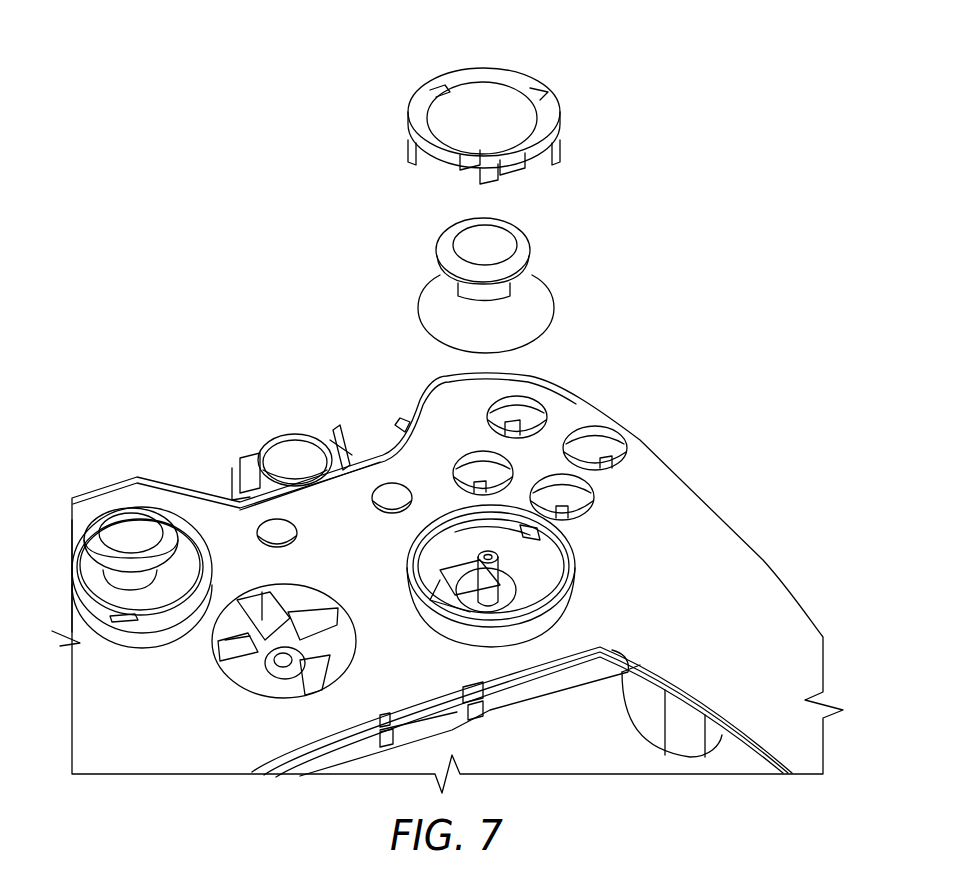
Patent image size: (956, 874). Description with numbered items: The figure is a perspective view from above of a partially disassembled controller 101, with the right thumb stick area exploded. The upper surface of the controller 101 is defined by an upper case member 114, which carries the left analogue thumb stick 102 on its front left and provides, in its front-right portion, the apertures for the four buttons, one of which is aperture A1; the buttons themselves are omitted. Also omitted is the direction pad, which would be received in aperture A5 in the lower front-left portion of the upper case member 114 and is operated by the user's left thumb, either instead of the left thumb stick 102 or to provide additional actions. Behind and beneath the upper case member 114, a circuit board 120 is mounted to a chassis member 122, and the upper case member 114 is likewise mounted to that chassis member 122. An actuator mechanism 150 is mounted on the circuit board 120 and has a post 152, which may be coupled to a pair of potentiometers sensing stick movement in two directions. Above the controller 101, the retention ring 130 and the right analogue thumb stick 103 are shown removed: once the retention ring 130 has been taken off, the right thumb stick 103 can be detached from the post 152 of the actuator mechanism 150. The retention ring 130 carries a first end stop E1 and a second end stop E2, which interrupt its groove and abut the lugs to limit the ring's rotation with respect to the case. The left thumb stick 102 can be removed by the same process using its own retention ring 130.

The controller 101 is at (180, 196).
The left analogue thumb stick 102 is at (130, 522).
The right analogue thumb stick 103 is at (523, 243).
The upper case member 114 is at (762, 566).
The circuit board 120 is at (378, 457).
The chassis member 122 is at (330, 440).
The retention ring 130 is at (197, 573).
The actuator mechanism 150 is at (515, 590).
The post 152 is at (553, 570).
The aperture A1 is at (528, 418).
The aperture A5 is at (283, 688).
The first end stop E1 is at (412, 152).
The second end stop E2 is at (482, 177).